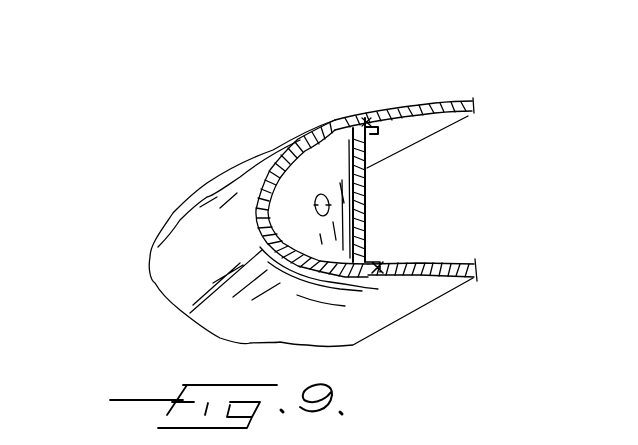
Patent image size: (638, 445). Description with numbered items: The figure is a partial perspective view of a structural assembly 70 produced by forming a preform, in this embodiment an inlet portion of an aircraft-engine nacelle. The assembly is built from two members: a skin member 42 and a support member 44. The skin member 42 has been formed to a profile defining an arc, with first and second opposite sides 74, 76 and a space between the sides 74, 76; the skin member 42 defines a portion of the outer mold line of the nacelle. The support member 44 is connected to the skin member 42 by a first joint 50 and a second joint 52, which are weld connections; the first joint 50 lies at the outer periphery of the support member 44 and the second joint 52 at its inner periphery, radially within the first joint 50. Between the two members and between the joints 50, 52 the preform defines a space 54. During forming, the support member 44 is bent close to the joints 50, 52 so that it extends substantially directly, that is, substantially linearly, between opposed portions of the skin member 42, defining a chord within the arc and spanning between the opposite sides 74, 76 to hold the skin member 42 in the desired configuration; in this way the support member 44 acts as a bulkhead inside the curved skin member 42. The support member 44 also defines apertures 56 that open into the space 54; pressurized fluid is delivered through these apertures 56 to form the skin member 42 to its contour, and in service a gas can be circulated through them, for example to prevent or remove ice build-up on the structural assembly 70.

The structural assembly 70 is at (196, 176).
The first side 74 is at (440, 98).
The space 54 is at (296, 176).
The support member 44 is at (368, 184).
The skin member 42 is at (331, 259).
The first joint 50 is at (369, 116).
The second joint 52 is at (381, 271).
The apertures 56 is at (313, 207).
The second side 76 is at (347, 306).